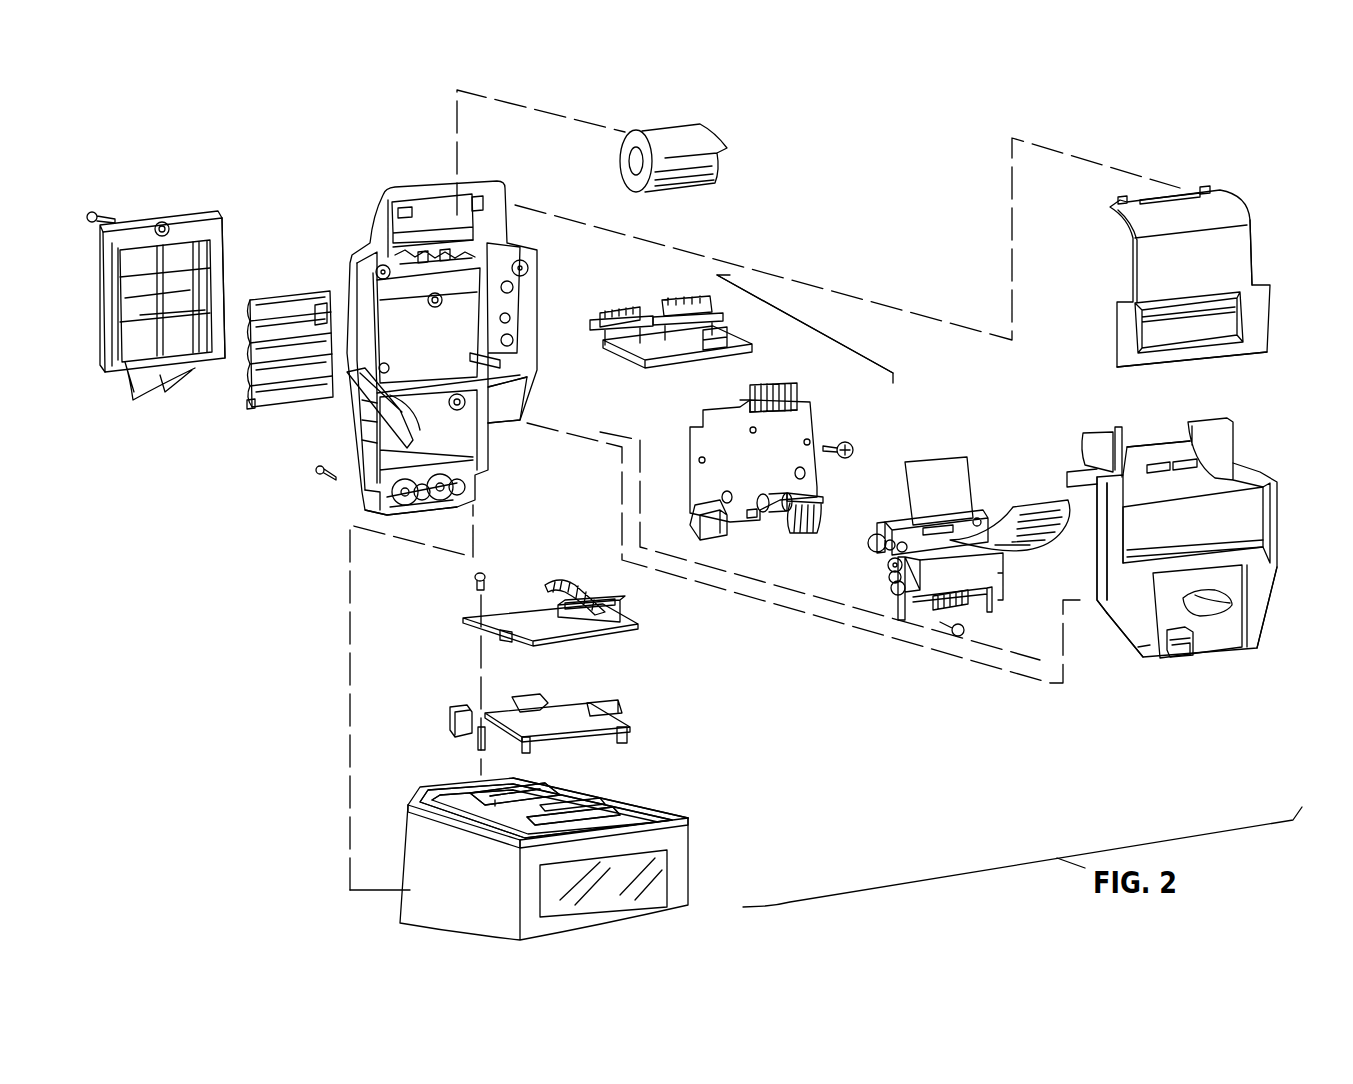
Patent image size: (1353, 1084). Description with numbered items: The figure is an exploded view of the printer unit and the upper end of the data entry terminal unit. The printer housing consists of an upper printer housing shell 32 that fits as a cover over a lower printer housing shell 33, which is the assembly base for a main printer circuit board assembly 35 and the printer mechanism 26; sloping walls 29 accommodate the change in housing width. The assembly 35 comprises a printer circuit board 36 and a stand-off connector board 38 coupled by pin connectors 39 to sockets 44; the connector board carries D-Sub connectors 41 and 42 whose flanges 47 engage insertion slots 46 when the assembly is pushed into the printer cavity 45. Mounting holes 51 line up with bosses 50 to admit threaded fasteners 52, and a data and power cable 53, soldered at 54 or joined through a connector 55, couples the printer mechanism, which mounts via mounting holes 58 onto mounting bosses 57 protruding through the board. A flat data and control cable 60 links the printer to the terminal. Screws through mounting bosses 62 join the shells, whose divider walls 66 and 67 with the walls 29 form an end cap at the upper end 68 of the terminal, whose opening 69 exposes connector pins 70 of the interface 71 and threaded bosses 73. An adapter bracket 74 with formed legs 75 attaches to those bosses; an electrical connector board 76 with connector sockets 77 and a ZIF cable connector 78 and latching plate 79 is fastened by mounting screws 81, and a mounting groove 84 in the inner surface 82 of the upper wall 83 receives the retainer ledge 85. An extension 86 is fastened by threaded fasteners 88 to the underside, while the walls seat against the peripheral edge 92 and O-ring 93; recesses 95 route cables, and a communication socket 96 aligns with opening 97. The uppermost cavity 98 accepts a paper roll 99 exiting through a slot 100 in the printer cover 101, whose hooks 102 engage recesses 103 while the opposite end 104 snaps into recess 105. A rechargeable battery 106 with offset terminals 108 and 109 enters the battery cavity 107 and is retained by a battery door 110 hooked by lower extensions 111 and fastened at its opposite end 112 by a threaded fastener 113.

The printer mechanism 26 is at (995, 580).
The sloping walls 29 is at (1118, 633).
The upper printer housing shell 32 is at (1298, 486).
The lower printer housing shell 33 is at (547, 319).
The main printer circuit board assembly 35 is at (805, 322).
The printer circuit board 36 is at (697, 442).
The connector board 38 is at (665, 361).
The pin connectors 39 is at (730, 332).
The connector 41 is at (690, 300).
The connector 42 is at (598, 311).
The sockets 44 is at (750, 395).
The printer cavity 45 is at (360, 404).
The insertion slots 46 is at (392, 255).
The flanges 47 is at (600, 330).
The bosses 50 is at (438, 306).
The mounting holes 51 is at (756, 434).
The threaded fasteners 52 is at (852, 444).
The data and power cable 53 is at (965, 605).
The solder point 54 is at (770, 414).
The connector 55 is at (820, 495).
The mounting bosses 57 is at (390, 366).
The mounting holes 58 is at (888, 570).
The data and control cable 60 is at (582, 584).
The mounting bosses 62 is at (457, 412).
The divider wall 66 is at (1197, 593).
The divider wall 67 is at (505, 365).
The upper end 68 is at (660, 799).
The opening 69 is at (626, 790).
The connector pins 70 is at (560, 790).
The electrical and data interface 71 is at (497, 792).
The threaded bosses 73 is at (465, 820).
The adapter bracket 74 is at (540, 698).
The formed legs 75 is at (530, 748).
The electrical connector board 76 is at (535, 606).
The connector sockets 77 is at (508, 642).
The cable connector 78 is at (625, 613).
The upper latching plate 79 is at (600, 600).
The mounting screws 81 is at (484, 574).
The inner surface 82 is at (1175, 628).
The upper wall 83 is at (1230, 640).
The mounting groove 84 is at (1183, 650).
The retainer ledge 85 is at (585, 735).
The extension 86 is at (365, 485).
The threaded fasteners 88 is at (320, 476).
The peripheral edge 92 is at (675, 813).
The O-ring 93 is at (688, 830).
The recess 95 is at (507, 405).
The communication socket 96 is at (693, 515).
The opening 97 is at (1100, 608).
The uppermost cavity 98 is at (1150, 457).
The roll of printer paper 99 is at (1032, 500).
The slot 100 is at (1215, 312).
The printer cover 101 is at (1255, 270).
The hooks 102 is at (1207, 188).
The recesses 103 is at (476, 196).
The opposite end 104 is at (1225, 355).
The recess 105 is at (1260, 540).
The rechargeable battery 106 is at (290, 406).
The battery cavity 107 is at (350, 298).
The offset terminal 108 is at (318, 305).
The offset terminal 109 is at (247, 405).
The battery door 110 is at (228, 292).
The lower extensions 111 is at (132, 392).
The opposite end 112 is at (190, 222).
The threaded fastener 113 is at (113, 213).